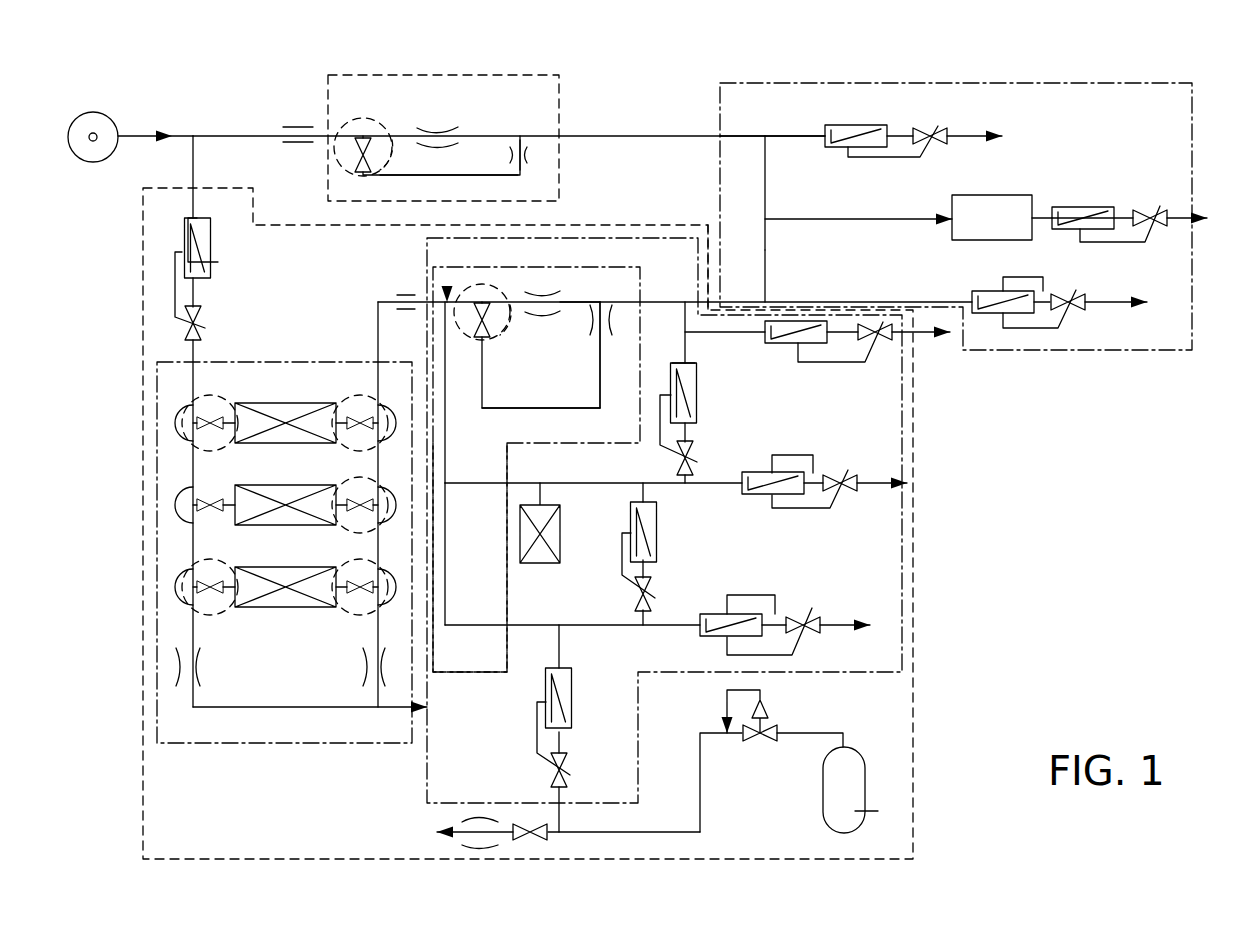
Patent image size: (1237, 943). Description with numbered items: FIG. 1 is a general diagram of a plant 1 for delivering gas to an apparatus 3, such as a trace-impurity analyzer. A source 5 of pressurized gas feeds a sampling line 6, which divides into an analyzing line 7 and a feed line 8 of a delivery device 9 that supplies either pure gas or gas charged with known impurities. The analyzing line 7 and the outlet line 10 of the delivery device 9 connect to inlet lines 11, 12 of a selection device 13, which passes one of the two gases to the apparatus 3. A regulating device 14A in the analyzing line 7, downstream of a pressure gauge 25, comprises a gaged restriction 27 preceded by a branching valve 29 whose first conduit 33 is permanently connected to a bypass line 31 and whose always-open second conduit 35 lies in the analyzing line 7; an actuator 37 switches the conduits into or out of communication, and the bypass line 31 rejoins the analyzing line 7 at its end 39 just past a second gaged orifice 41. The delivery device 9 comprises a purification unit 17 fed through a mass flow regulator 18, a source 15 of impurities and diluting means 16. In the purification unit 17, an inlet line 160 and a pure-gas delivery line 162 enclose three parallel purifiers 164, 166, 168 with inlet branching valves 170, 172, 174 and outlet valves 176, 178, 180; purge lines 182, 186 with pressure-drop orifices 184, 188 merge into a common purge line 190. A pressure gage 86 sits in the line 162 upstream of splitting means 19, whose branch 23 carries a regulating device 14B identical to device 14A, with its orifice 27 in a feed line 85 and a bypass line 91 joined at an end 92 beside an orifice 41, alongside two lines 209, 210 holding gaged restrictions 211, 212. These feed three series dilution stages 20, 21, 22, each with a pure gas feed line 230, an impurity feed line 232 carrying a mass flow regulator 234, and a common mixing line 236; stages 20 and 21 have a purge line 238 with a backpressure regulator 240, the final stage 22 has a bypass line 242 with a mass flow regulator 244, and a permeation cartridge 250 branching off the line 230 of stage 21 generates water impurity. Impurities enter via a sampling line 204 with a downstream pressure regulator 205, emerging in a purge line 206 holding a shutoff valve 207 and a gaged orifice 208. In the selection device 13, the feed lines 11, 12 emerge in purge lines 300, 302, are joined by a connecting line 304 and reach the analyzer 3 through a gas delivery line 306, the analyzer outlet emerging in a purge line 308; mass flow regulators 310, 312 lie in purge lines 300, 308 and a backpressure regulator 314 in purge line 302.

The plant 1 is at (1053, 546).
The apparatus 3 is at (980, 210).
The source 5 is at (108, 116).
The sampling line 6 is at (124, 138).
The analyzing line 7 is at (235, 135).
The feed line 8 is at (193, 162).
The delivery device 9 is at (143, 292).
The outlet line 10 is at (712, 300).
The inlet line 11 is at (740, 135).
The inlet line 12 is at (766, 300).
The selection device 13 is at (735, 83).
The regulating device 14A is at (400, 68).
The regulating device 14B is at (598, 296).
The source of impurities 15 is at (823, 784).
The diluting means 16 is at (426, 790).
The purification unit 17 is at (246, 362).
The mass flow regulator 18 is at (213, 246).
The splitting means 19 is at (450, 675).
The dilution stage 20 is at (750, 595).
The dilution stage 21 is at (807, 465).
The dilution stage 22 is at (702, 396).
The branch 23 is at (447, 286).
The pressure gauge 25 is at (298, 126).
The gaged restriction 27 is at (450, 126).
The branching valve 29 is at (370, 118).
The bypass line 31 is at (455, 177).
The first conduit 33 is at (362, 173).
The second conduit 35 is at (362, 120).
The actuator 37 is at (371, 156).
The end 39 is at (556, 150).
The second gaged orifice 41 is at (506, 158).
The feed line 85 is at (579, 300).
The pressure gage 86 is at (405, 294).
The bypass line 91 is at (518, 407).
The end 92 is at (616, 302).
The inlet line 160 is at (158, 370).
The delivery line 162 is at (377, 336).
The purifier 164 is at (262, 444).
The purifier 166 is at (262, 526).
The purifier 168 is at (272, 608).
The branching valve 170 is at (153, 425).
The branching valve 172 is at (153, 490).
The branching valve 174 is at (153, 580).
The valve 176 is at (372, 394).
The valve 178 is at (370, 478).
The valve 180 is at (372, 562).
The purge line 182 is at (198, 636).
The element for creating a pressure drop 184 is at (200, 672).
The purge line 186 is at (372, 625).
The element for creating a pressure drop 188 is at (372, 660).
The common purge line 190 is at (378, 708).
The sampling line 204 is at (650, 832).
The downstream pressure regulator 205 is at (770, 730).
The purge line 206 is at (548, 835).
The shutoff valve 207 is at (530, 842).
The gaged orifice 208 is at (482, 845).
The line 209 is at (505, 624).
The line 210 is at (500, 483).
The gaged restriction 211 is at (447, 602).
The gaged restriction 212 is at (447, 464).
The pure gas feed line 230 is at (684, 352).
The impurity-containing gas feed line 232 is at (683, 348).
The mass flow regulator 234 is at (697, 412).
The mixing line 236 is at (681, 487).
The purge line 238 is at (708, 485).
The backpressure regulator 240 is at (772, 470).
The bypass line 242 is at (710, 333).
The mass flow regulator 244 is at (805, 355).
The permeation cartridge 250 is at (560, 548).
The purge line 300 is at (790, 135).
The purge line 302 is at (895, 300).
The connecting line 304 is at (766, 206).
The gas delivery line 306 is at (826, 218).
The purge line 308 is at (1042, 220).
The mass flow regulator 310 is at (860, 124).
The mass flow regulator 312 is at (1068, 206).
The backpressure regulator 314 is at (985, 291).